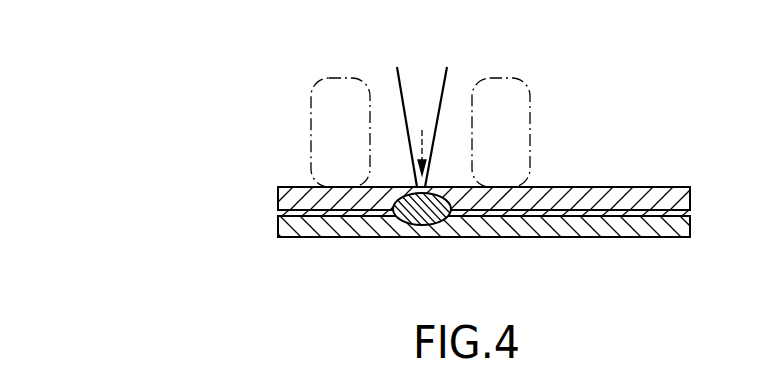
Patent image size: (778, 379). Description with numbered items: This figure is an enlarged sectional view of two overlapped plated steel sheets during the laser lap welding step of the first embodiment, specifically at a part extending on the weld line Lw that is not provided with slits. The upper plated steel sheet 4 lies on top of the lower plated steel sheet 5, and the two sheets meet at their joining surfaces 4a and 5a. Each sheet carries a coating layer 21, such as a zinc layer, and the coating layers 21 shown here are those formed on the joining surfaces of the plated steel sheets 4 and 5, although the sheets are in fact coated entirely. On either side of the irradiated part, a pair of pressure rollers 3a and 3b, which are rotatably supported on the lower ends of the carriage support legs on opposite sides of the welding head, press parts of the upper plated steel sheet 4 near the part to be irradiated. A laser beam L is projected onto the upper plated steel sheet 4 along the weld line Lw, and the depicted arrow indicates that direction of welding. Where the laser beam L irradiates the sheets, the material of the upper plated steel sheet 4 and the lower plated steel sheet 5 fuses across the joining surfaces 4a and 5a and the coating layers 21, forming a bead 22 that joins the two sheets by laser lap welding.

The pressure roller 3a is at (311, 124).
The pressure roller 3b is at (530, 117).
The upper plated steel sheet 4 is at (643, 193).
The joining surface 4a is at (293, 188).
The lower plated steel sheet 5 is at (643, 228).
The joining surface 5a is at (335, 212).
The coating layer 21 is at (306, 217).
The bead 22 is at (424, 219).
The laser beam L is at (449, 80).
The weld line Lw is at (427, 145).